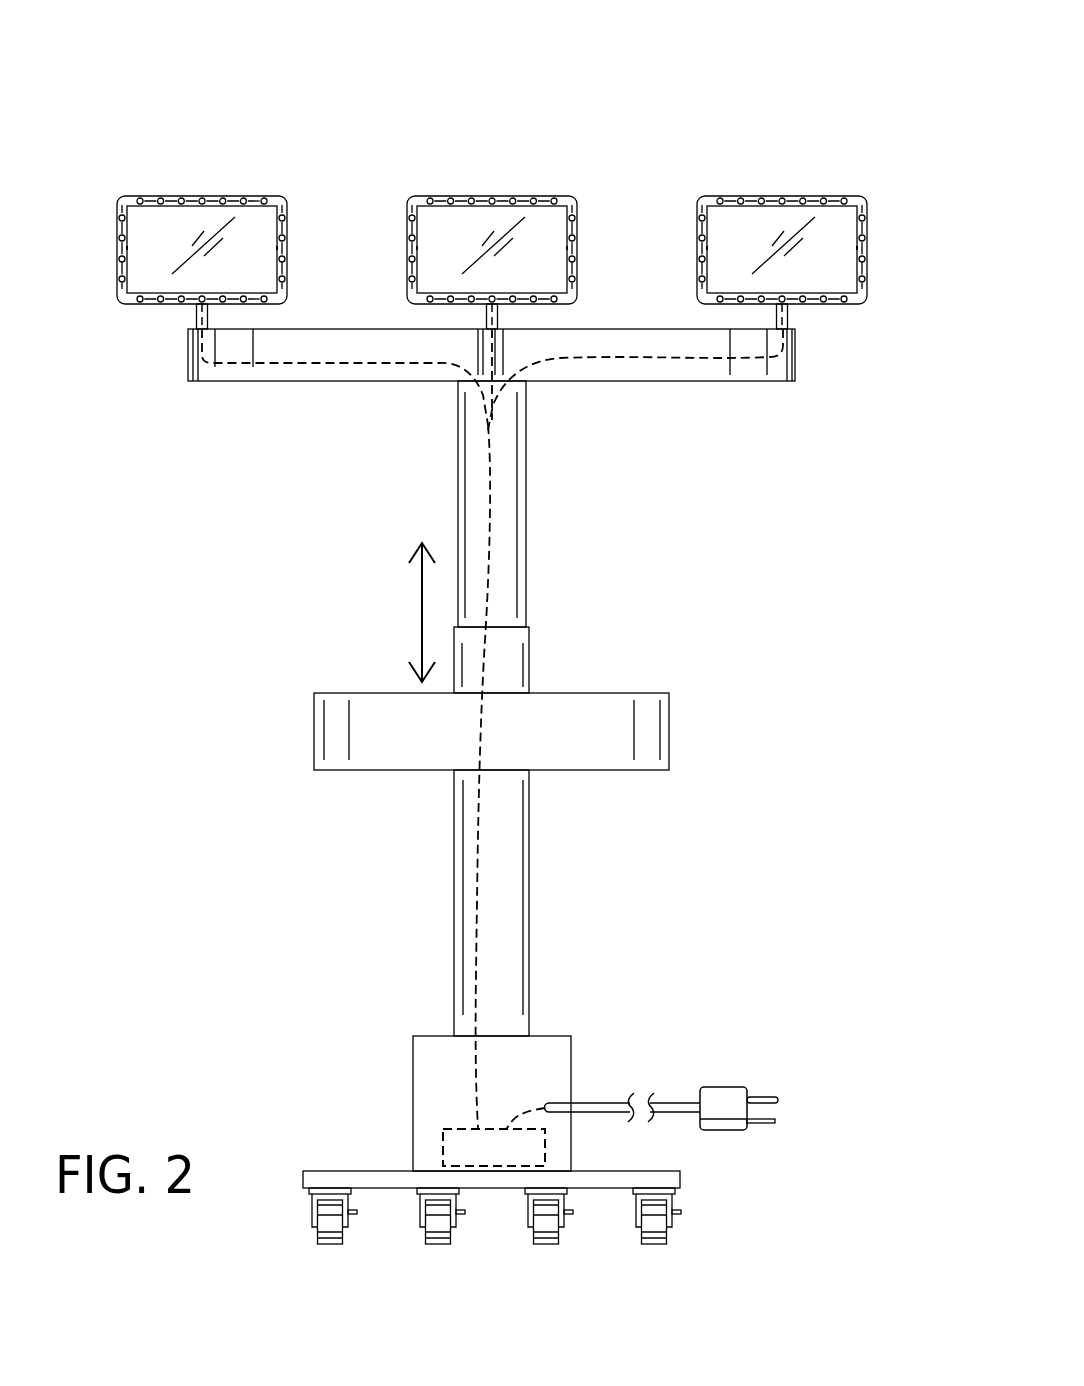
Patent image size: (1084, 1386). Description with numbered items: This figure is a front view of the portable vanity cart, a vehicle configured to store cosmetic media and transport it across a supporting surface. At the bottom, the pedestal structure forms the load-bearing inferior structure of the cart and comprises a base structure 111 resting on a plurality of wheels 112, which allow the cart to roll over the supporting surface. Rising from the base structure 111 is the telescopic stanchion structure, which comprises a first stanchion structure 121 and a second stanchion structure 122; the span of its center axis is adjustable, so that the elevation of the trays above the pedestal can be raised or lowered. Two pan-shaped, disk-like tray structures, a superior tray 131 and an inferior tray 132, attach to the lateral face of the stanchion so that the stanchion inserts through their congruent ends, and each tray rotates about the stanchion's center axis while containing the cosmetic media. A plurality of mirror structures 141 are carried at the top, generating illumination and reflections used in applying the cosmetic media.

The mirror structures 141 is at (733, 195).
The superior tray 131 is at (795, 342).
The second stanchion structure 122 is at (526, 497).
The inferior tray 132 is at (660, 717).
The first stanchion structure 121 is at (528, 946).
The base structure 111 is at (571, 1050).
The wheels 112 is at (668, 1238).